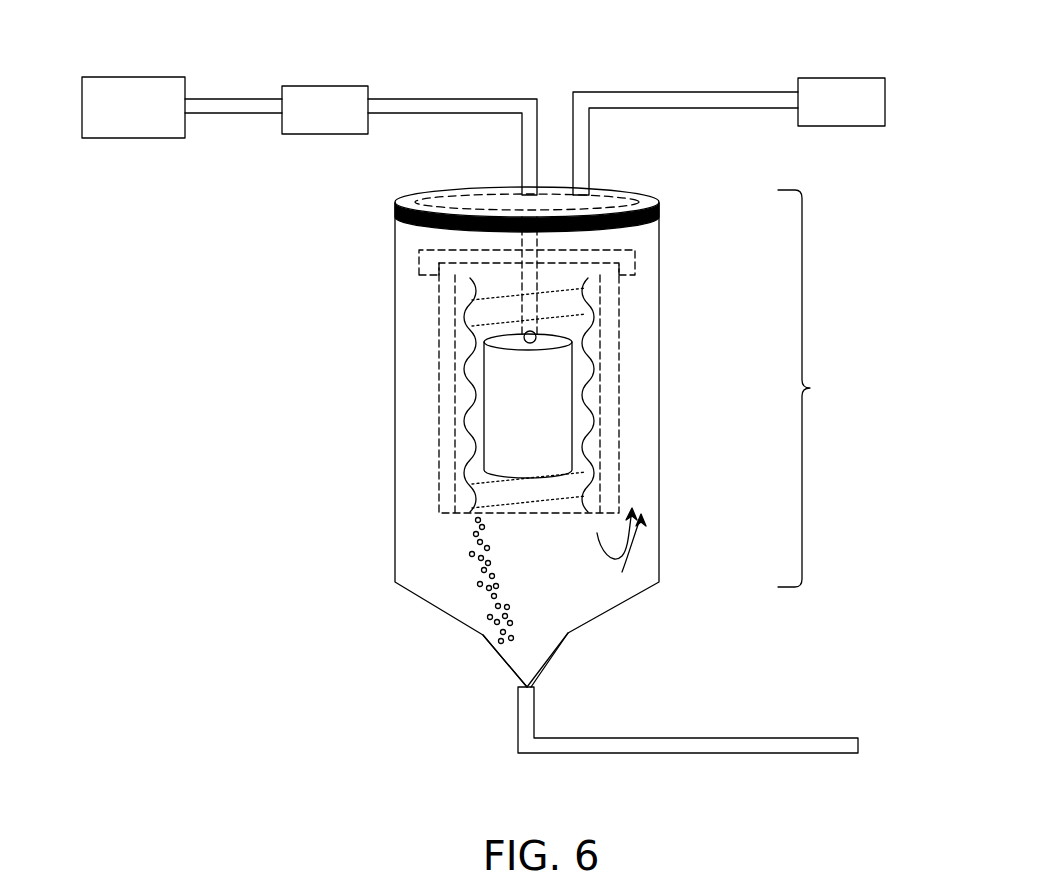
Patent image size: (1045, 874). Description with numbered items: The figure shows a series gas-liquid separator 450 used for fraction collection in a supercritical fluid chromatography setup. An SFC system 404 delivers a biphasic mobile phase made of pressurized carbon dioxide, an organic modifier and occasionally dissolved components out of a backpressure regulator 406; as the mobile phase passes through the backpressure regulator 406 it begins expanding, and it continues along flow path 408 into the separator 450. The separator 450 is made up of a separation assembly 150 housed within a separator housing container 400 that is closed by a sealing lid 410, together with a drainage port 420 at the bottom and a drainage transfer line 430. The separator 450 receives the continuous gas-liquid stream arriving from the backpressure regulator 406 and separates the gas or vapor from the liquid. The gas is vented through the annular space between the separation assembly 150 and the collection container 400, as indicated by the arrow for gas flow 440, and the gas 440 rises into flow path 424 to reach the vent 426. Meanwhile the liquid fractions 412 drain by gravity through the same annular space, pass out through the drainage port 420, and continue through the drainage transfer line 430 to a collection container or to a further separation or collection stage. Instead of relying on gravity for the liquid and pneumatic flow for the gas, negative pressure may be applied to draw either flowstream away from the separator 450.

The SFC system 404 is at (136, 77).
The backpressure regulator 406 is at (326, 86).
The flow path 408 is at (452, 99).
The flow path 424 is at (666, 92).
The vent 426 is at (842, 78).
The sealing lid 410 is at (407, 197).
The separator housing container 400 is at (394, 347).
The separation assembly 150 is at (616, 342).
The liquid fractions 412 is at (470, 556).
The gas flow 440 is at (642, 552).
The drainage port 420 is at (506, 661).
The drainage transfer line 430 is at (709, 738).
The series gas-liquid separator 450 is at (820, 388).